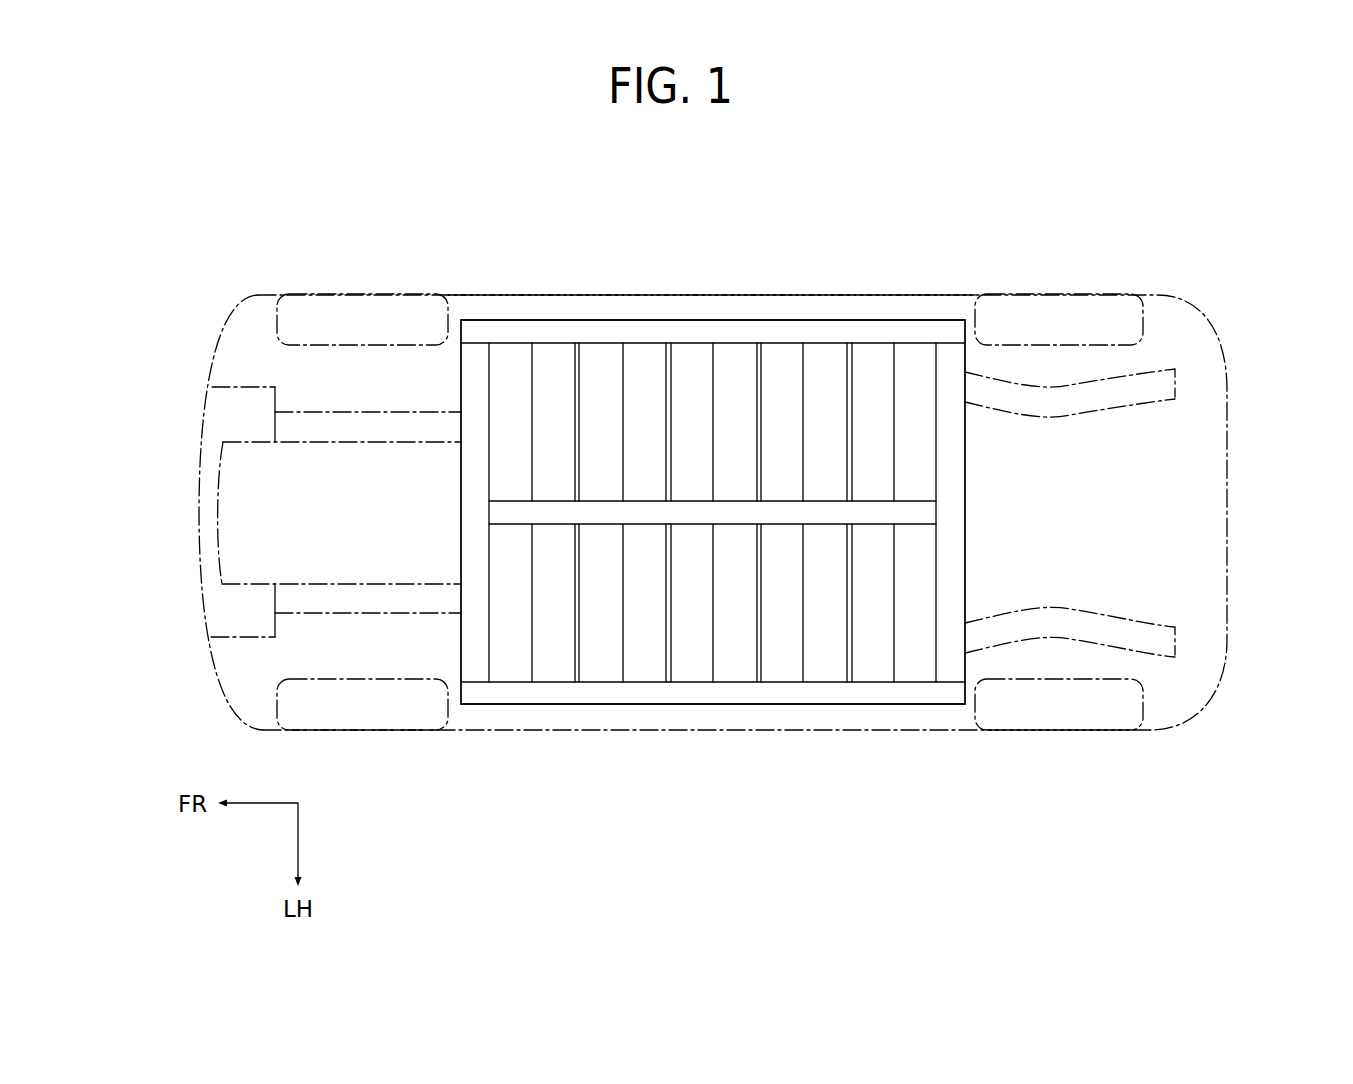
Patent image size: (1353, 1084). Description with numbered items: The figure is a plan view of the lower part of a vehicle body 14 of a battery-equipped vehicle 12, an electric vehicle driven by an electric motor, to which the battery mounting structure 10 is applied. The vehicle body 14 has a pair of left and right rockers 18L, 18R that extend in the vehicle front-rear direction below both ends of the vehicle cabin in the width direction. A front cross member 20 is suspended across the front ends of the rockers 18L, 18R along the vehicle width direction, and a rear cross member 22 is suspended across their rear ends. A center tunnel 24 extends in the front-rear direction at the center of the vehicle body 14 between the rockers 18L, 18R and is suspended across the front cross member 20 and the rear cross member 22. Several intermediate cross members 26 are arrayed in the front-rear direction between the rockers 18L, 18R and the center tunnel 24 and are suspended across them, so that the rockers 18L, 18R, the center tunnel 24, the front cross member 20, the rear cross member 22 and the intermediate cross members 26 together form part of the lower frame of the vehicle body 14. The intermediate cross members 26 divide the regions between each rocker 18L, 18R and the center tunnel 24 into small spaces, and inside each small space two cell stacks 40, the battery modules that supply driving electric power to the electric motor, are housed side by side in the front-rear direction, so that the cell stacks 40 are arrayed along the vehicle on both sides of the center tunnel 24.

The battery mounting structure 10 is at (697, 223).
The battery-equipped vehicle 12 is at (363, 262).
The vehicle body 14 is at (477, 290).
The right rocker 18R is at (747, 330).
The left rocker 18L is at (747, 692).
The front cross member 20 is at (470, 513).
The rear cross member 22 is at (950, 552).
The center tunnel 24 is at (908, 510).
The intermediate cross member 26 is at (581, 358).
The cell stack 40 is at (556, 350).